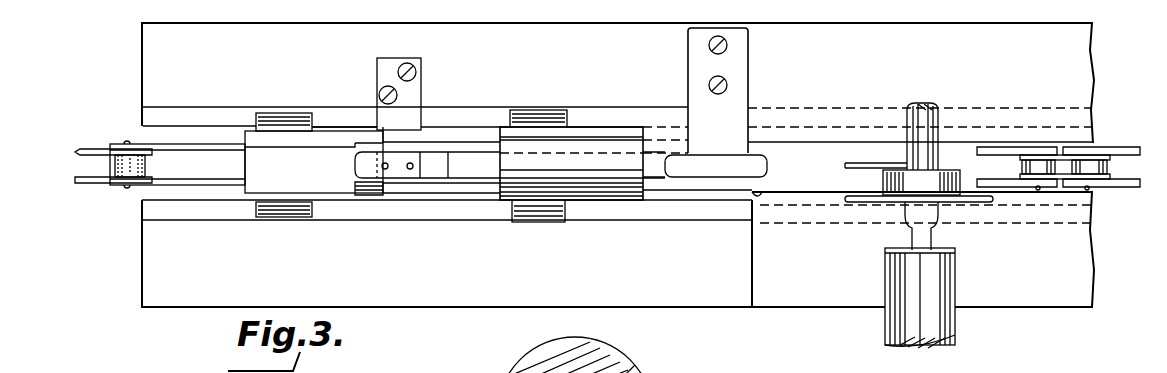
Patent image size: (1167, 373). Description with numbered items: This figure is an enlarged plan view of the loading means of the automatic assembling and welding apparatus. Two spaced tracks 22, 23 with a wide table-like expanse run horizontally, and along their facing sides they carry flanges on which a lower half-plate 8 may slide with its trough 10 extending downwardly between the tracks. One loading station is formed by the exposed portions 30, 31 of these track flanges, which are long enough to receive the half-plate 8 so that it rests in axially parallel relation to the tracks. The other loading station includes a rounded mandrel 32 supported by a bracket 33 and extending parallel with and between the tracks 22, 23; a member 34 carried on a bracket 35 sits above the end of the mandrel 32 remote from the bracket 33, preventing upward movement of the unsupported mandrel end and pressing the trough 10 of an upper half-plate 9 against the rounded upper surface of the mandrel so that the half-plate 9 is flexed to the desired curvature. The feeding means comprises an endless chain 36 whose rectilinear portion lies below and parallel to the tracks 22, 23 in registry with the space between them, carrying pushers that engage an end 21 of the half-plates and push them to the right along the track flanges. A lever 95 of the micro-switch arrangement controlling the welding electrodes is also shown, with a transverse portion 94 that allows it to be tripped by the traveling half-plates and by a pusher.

The track 22 is at (512, 42).
The track 23 is at (163, 284).
The half-plate 8 is at (290, 178).
The half-plate 9 is at (580, 145).
The trough 10 is at (258, 158).
The end 21 is at (618, 363).
The exposed portion of flange 30 is at (328, 206).
The exposed portion of flange 31 is at (328, 123).
The mandrel 32 is at (400, 167).
The bracket 33 is at (407, 97).
The member 34 is at (735, 167).
The bracket 35 is at (728, 67).
The endless chain 36 is at (1085, 158).
The transverse portion 94 is at (935, 152).
The lever 95 is at (845, 165).